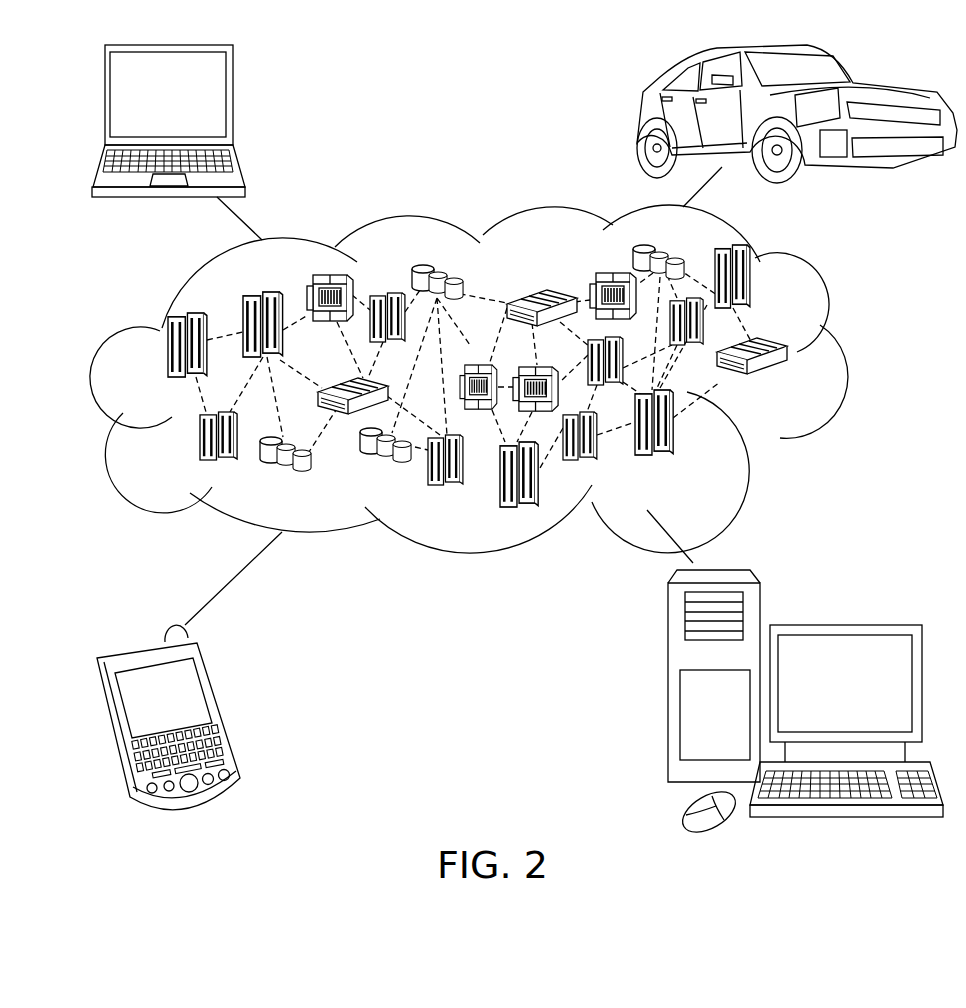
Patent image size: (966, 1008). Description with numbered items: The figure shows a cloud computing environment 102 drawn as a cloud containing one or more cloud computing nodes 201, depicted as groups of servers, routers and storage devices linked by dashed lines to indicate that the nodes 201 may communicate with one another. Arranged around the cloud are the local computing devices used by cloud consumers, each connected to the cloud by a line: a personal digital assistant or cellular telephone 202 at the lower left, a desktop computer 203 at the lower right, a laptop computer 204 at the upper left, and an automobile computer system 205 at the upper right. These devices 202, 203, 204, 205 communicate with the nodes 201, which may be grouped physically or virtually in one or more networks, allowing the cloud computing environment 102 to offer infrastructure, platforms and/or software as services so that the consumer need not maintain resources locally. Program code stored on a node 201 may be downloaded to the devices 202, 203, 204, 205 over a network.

The cloud computing environment 102 is at (842, 355).
The cloud computing nodes 201 is at (796, 384).
The personal digital assistant or cellular telephone 202 is at (223, 712).
The desktop computer 203 is at (841, 625).
The laptop computer 204 is at (233, 102).
The automobile computer system 205 is at (641, 117).